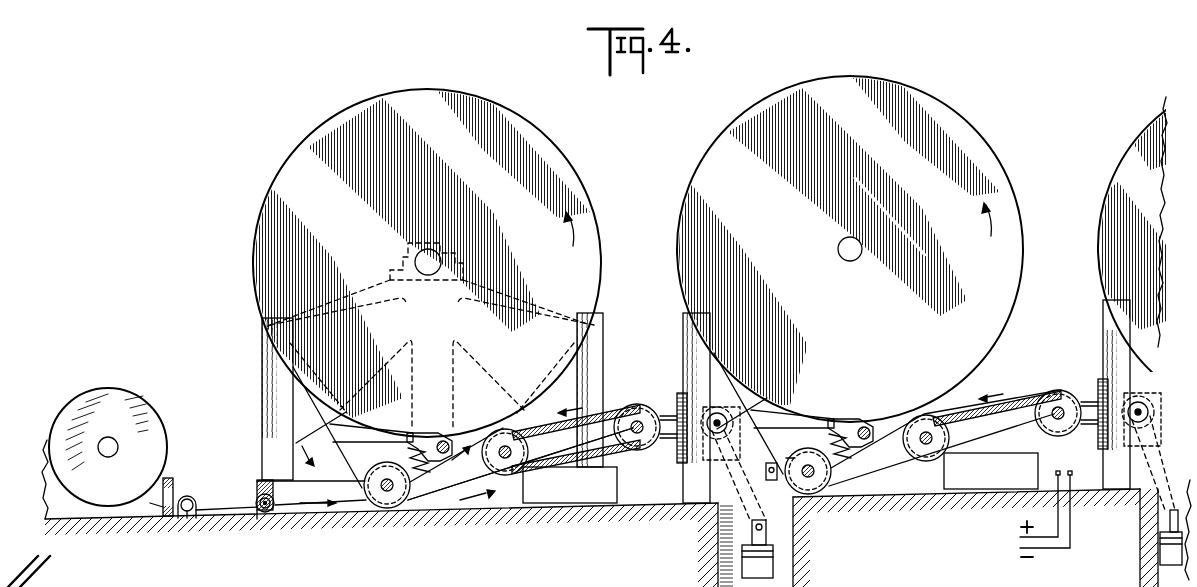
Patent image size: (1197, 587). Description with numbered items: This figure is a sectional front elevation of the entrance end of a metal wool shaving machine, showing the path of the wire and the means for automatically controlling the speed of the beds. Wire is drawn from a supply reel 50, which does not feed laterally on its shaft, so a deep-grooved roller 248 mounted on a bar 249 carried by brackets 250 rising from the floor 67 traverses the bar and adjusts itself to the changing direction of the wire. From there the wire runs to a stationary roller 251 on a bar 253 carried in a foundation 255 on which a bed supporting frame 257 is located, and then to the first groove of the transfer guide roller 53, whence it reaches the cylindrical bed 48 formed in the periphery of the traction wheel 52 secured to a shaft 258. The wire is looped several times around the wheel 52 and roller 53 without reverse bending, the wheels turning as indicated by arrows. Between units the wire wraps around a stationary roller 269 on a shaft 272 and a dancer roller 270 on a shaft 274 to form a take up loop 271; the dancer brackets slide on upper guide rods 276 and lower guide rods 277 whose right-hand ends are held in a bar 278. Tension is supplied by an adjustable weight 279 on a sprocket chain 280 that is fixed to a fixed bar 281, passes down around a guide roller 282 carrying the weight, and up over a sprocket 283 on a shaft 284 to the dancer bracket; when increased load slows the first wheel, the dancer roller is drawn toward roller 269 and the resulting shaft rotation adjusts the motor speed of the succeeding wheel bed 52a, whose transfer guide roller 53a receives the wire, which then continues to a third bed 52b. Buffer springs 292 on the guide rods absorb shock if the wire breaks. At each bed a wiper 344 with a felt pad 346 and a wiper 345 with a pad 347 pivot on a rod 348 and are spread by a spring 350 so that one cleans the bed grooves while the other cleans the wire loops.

The cylindrical bed 48 is at (292, 153).
The supply reel 50 is at (120, 391).
The traction wheel 52 is at (338, 115).
The succeeding wheel bed 52a is at (984, 106).
The third bed 52b is at (1134, 134).
The transfer guide roller 53 is at (388, 510).
The transfer guide roller 53a is at (815, 494).
The floor 67 is at (117, 527).
The roller 248 is at (196, 502).
The bar 249 is at (186, 496).
The brackets 250 is at (188, 518).
The roller 251 is at (256, 502).
The bar 253 is at (276, 504).
The foundation 255 is at (328, 468).
The bed supporting frame 257 is at (262, 382).
The shaft 258 is at (414, 261).
The stationary roller 269 is at (505, 476).
The dancer roller 270 is at (636, 404).
The take up loop 271 is at (552, 418).
The shaft 272 is at (503, 440).
The shaft 274 is at (636, 450).
The upper guide rods 276 is at (585, 424).
The lower guide rods 277 is at (593, 470).
The bar 278 is at (680, 392).
The adjustable weight 279 is at (776, 572).
The sprocket chain 280 is at (745, 489).
The fixed bar 281 is at (769, 465).
The guide roller 282 is at (757, 519).
The sprocket 283 is at (722, 414).
The shaft 284 is at (716, 432).
The buffer springs 292 is at (668, 412).
The wiper 344 is at (395, 434).
The wiper 345 is at (428, 476).
The pad 346 is at (842, 418).
The pad 347 is at (848, 462).
The rod 348 is at (446, 440).
The spring 350 is at (410, 458).